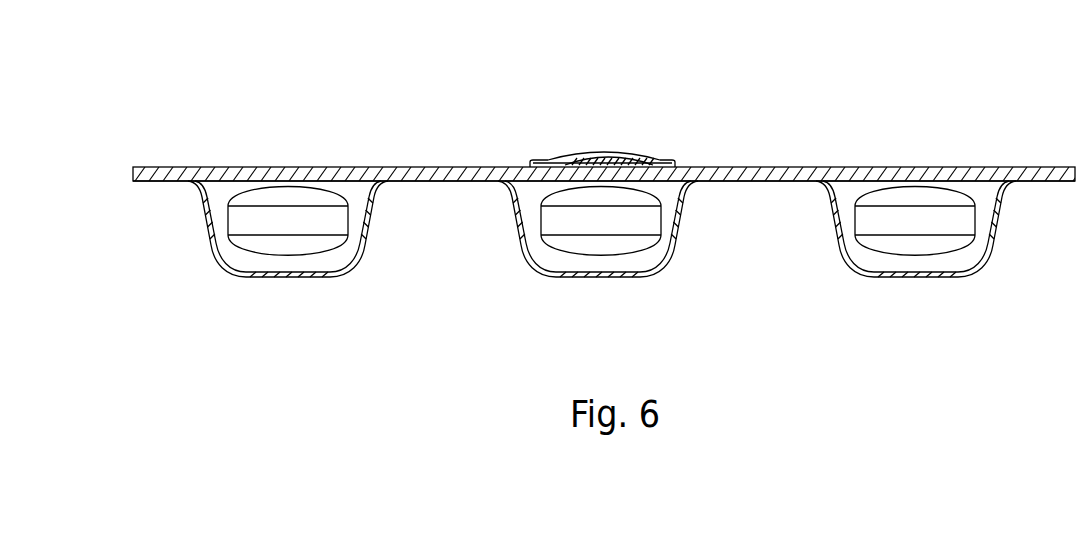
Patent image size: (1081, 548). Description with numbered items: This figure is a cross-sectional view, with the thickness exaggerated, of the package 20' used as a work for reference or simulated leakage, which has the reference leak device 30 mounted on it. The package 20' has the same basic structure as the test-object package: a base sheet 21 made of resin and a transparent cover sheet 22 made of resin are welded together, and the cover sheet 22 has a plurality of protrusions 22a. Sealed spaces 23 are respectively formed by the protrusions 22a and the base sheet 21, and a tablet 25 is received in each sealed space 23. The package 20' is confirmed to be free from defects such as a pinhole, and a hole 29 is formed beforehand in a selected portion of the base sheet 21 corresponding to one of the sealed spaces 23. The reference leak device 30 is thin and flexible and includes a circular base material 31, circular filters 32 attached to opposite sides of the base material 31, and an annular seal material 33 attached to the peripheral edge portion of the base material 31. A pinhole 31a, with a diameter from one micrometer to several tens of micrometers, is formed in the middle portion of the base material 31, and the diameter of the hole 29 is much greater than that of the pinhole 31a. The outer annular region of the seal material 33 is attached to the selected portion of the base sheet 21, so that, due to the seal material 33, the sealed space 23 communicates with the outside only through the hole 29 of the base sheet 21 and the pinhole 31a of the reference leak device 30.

The package for reference leakage 20' is at (891, 84).
The base sheet 21 is at (772, 167).
The cover sheet 22 is at (458, 182).
The protrusions 22a is at (360, 256).
The sealed spaces 23 is at (322, 260).
The tablet 25 is at (330, 222).
The hole 29 is at (603, 176).
The reference leak device 30 is at (601, 199).
The base material 31 is at (630, 153).
The pinhole 31a is at (604, 160).
The filters 32 is at (600, 164).
The seal material 33 is at (560, 160).